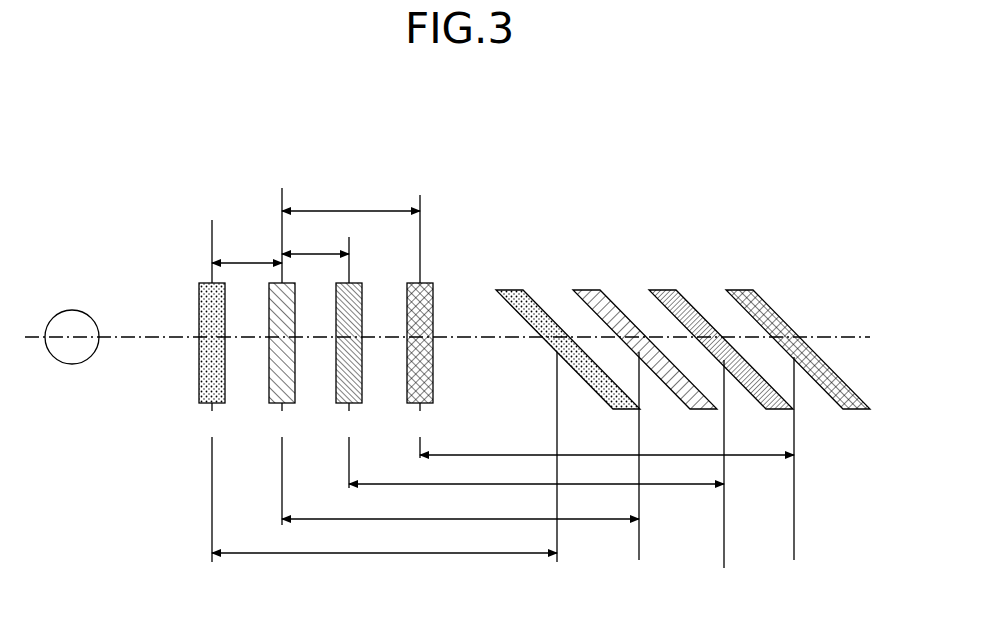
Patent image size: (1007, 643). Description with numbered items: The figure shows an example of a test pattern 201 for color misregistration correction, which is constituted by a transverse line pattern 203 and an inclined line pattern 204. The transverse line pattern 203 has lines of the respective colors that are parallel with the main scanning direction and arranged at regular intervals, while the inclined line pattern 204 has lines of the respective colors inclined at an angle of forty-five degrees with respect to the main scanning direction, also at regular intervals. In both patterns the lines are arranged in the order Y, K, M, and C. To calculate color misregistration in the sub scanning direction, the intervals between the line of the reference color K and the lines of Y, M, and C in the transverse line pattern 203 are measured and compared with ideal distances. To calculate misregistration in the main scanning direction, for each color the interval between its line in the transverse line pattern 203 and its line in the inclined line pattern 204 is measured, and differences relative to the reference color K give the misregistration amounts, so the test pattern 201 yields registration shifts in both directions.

The test pattern for color misregistration correction 201 is at (553, 116).
The transverse line pattern 203 is at (437, 182).
The inclined line pattern 204 is at (758, 252).